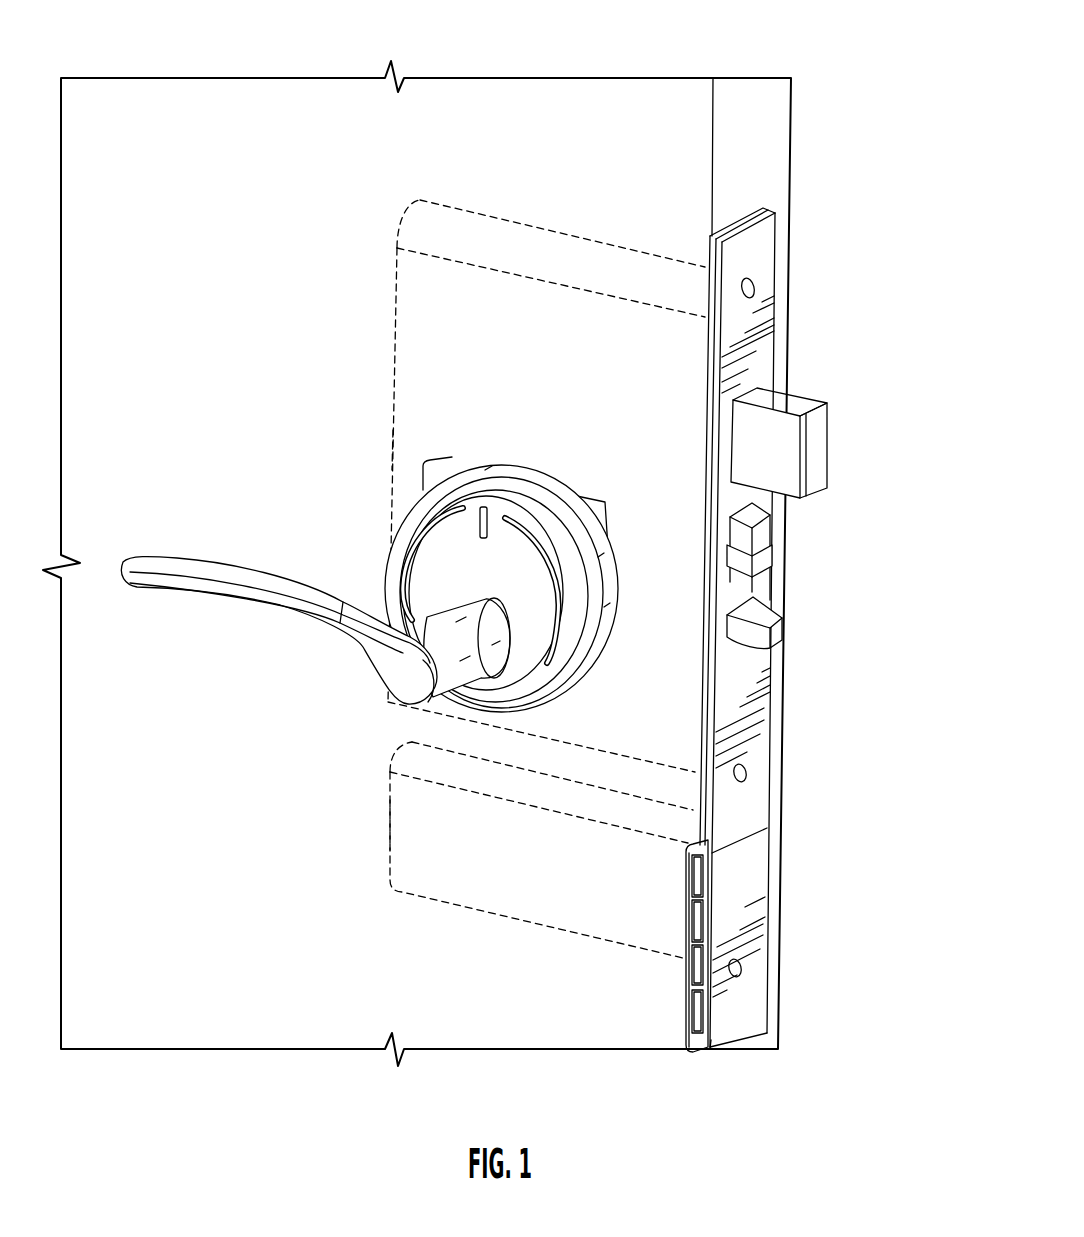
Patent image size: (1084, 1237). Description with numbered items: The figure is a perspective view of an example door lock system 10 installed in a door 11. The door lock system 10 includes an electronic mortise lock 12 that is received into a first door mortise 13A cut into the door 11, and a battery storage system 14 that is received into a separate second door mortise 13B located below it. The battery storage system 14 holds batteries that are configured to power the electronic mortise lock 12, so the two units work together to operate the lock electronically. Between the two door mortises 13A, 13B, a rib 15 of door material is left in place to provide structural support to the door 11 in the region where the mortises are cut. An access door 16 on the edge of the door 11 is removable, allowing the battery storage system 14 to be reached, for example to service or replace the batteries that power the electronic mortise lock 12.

The door lock system 10 is at (893, 320).
The door 11 is at (592, 106).
The electronic mortise lock 12 is at (423, 285).
The first door mortise 13A is at (388, 343).
The second door mortise 13B is at (378, 826).
The battery storage system 14 is at (468, 917).
The rib 15 is at (450, 725).
The access door 16 is at (745, 905).